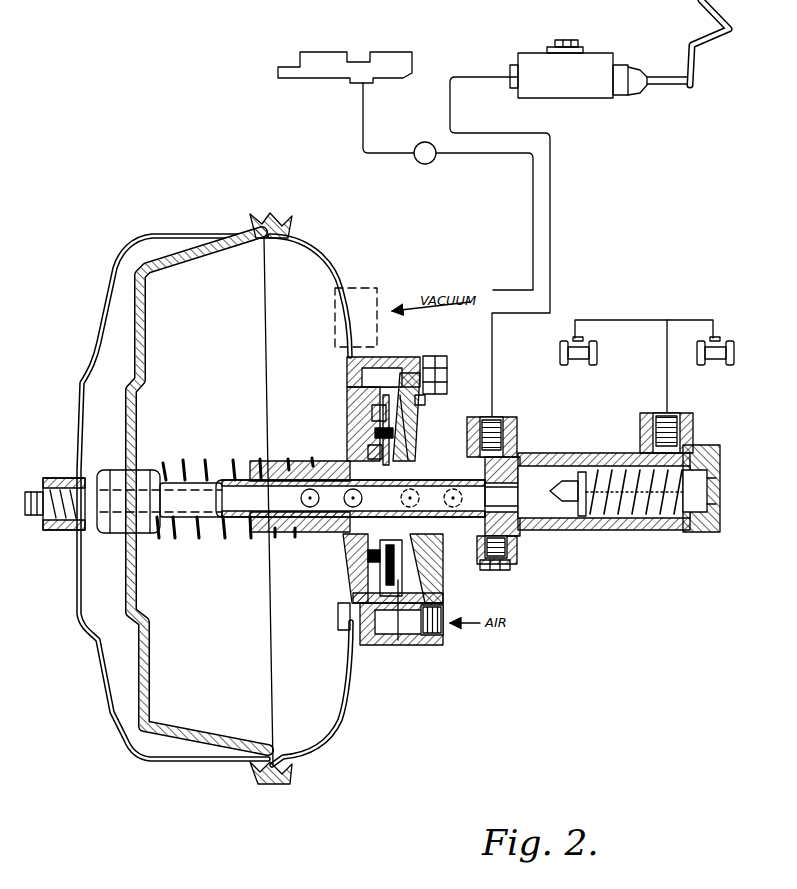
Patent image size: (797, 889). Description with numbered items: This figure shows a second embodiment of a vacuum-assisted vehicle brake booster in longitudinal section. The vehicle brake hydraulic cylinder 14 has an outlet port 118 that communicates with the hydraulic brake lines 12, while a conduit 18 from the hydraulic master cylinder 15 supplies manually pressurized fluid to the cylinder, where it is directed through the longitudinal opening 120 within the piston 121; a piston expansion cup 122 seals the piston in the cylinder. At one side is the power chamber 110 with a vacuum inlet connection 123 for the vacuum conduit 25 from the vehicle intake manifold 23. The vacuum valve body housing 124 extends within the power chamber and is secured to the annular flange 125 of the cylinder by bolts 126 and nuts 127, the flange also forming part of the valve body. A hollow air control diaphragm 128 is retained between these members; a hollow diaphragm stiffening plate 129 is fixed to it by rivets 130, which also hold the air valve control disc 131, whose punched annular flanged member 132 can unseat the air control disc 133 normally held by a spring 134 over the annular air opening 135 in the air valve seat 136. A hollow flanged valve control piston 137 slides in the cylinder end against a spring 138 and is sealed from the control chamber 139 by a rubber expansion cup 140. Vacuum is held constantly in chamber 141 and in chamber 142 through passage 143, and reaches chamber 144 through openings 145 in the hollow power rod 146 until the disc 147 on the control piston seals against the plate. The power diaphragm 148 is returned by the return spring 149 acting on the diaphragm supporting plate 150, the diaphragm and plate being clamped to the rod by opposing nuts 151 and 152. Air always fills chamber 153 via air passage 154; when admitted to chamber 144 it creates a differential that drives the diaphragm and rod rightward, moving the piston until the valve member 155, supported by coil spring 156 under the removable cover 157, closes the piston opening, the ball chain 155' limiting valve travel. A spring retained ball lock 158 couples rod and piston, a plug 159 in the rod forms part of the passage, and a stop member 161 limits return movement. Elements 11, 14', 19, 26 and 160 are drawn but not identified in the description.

The wheel brake cylinders 11 is at (648, 364).
The hydraulic brake lines 12 is at (650, 320).
The vehicle brake hydraulic cylinder 14 is at (604, 470).
The air inlet plug 14' is at (466, 636).
The hydraulic master cylinder 15 is at (597, 93).
The conduit 18 is at (552, 235).
The port 19 is at (500, 414).
The vehicle intake manifold 23 is at (307, 79).
The vacuum conduit 25 is at (532, 212).
The check valve 26 is at (431, 162).
The power chamber 110 is at (134, 761).
The outlet port 118 is at (670, 411).
The longitudinal opening 120 is at (547, 481).
The piston 121 is at (547, 531).
The piston expansion cup 122 is at (567, 521).
The vacuum inlet connection 123 is at (371, 312).
The vacuum valve body housing 124 is at (378, 574).
The annular flange 125 is at (413, 648).
The bolts 126 is at (424, 400).
The nuts 127 is at (441, 371).
The hollow air control diaphragm 128 is at (396, 392).
The hollow diaphragm stiffening plate 129 is at (398, 618).
The rivets 130 is at (403, 568).
The air valve control disc 131 is at (380, 415).
The annular flanged member 132 is at (373, 571).
The air control disc 133 is at (372, 436).
The spring 134 is at (360, 449).
The annular air opening 135 is at (408, 564).
The air valve seat 136 is at (372, 428).
The hollow flanged valve control piston 137 is at (484, 420).
The spring 138 is at (347, 538).
The control chamber 139 is at (517, 467).
The rubber expansion cup 140 is at (432, 521).
The chamber 141 is at (290, 272).
The chamber 142 is at (492, 400).
The passage 143 is at (363, 378).
The chamber 144 is at (120, 313).
The openings 145 is at (273, 531).
The hollow power rod 146 is at (190, 500).
The disc 147 is at (408, 460).
The power diaphragm 148 is at (200, 741).
The return spring 149 is at (183, 463).
The diaphragm supporting plate 150 is at (138, 402).
The nut 151 is at (110, 527).
The nut 152 is at (103, 478).
The chamber 153 is at (373, 558).
The air passage 154 is at (372, 641).
The valve member 155 is at (575, 462).
The ball chain 155' is at (708, 537).
The coil spring 156 is at (647, 504).
The removable cover 157 is at (717, 509).
The spring retained ball lock 158 is at (520, 474).
The plug 159 is at (520, 522).
The cylinder bore 160 is at (643, 514).
The stop member 161 is at (523, 541).